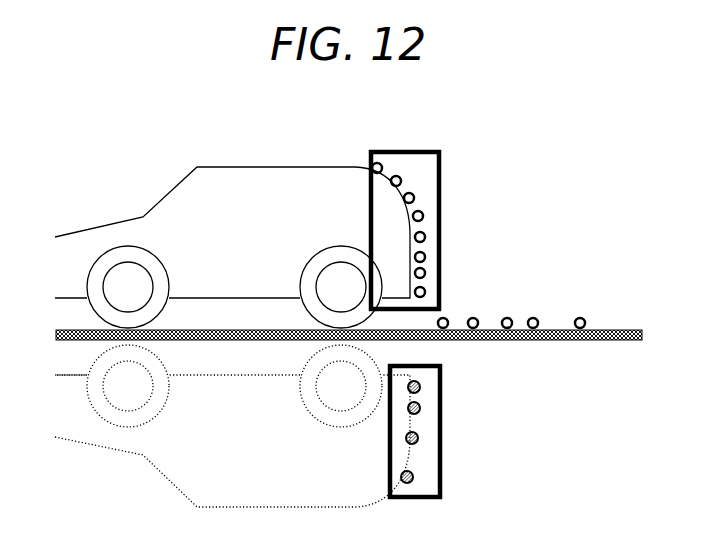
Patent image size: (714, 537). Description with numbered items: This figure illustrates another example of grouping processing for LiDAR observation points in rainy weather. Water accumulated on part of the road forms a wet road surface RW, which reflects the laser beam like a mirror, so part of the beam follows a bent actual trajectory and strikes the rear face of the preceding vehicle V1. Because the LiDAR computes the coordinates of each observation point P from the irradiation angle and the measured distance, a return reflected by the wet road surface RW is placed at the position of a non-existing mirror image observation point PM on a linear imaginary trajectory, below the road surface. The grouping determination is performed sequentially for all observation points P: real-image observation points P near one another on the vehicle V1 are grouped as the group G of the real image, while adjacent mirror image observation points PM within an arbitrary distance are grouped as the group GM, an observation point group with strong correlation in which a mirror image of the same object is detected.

The preceding vehicle V1 is at (205, 164).
The group of observation point group of the real image G is at (440, 163).
The observation point P is at (510, 315).
The wet road surface RW is at (600, 341).
The group of observation point group of mirror image GM is at (442, 455).
The mirror image observation point PM is at (422, 408).